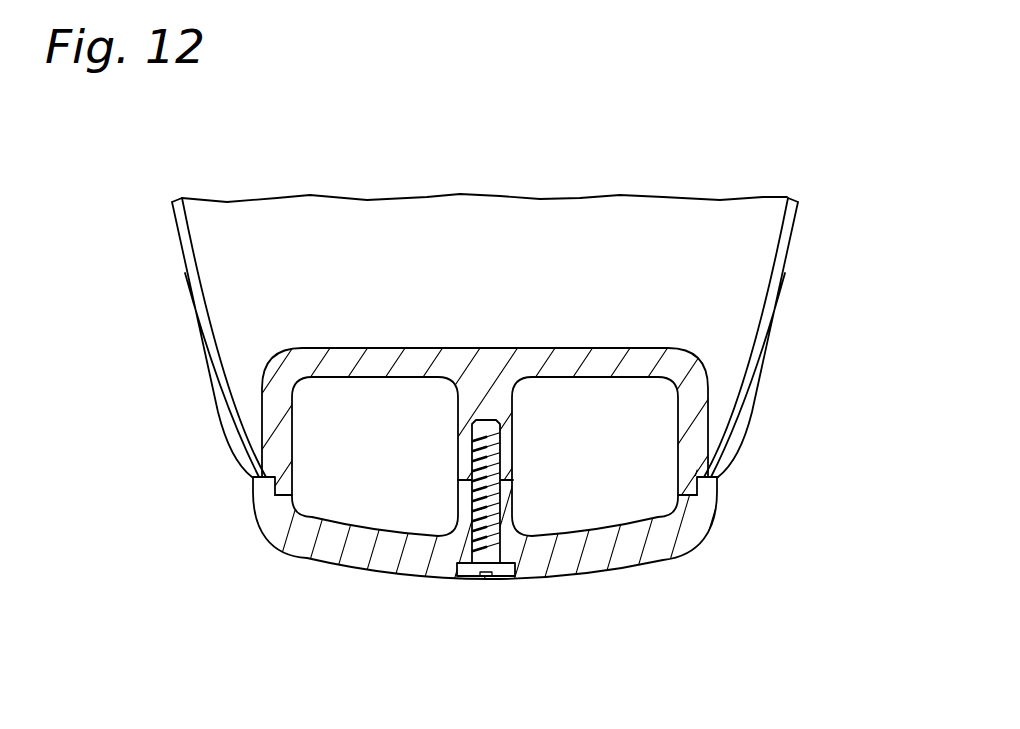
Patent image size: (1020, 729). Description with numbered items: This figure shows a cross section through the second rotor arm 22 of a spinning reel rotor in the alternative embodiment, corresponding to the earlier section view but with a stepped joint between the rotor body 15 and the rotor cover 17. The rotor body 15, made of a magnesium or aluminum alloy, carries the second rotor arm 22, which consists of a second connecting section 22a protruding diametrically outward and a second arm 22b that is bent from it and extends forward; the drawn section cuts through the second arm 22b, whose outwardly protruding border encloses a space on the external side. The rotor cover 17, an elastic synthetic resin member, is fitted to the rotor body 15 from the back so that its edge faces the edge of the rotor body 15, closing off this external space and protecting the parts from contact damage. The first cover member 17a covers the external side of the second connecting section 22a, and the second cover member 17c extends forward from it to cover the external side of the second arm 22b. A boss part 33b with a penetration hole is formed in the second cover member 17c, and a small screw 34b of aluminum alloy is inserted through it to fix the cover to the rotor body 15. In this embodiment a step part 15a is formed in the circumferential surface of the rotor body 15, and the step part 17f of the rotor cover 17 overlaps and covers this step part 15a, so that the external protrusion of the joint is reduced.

The rotor body 15 is at (566, 331).
The step part 15a is at (262, 515).
The rotor cover 17 is at (712, 543).
The first cover member 17a is at (747, 421).
The second cover member 17c is at (600, 560).
The step part 17f is at (275, 490).
The second rotor arm 22 is at (643, 334).
The second connecting section 22a is at (663, 219).
The second arm 22b is at (593, 365).
The boss part 33b is at (458, 497).
The small screw 34b is at (488, 578).